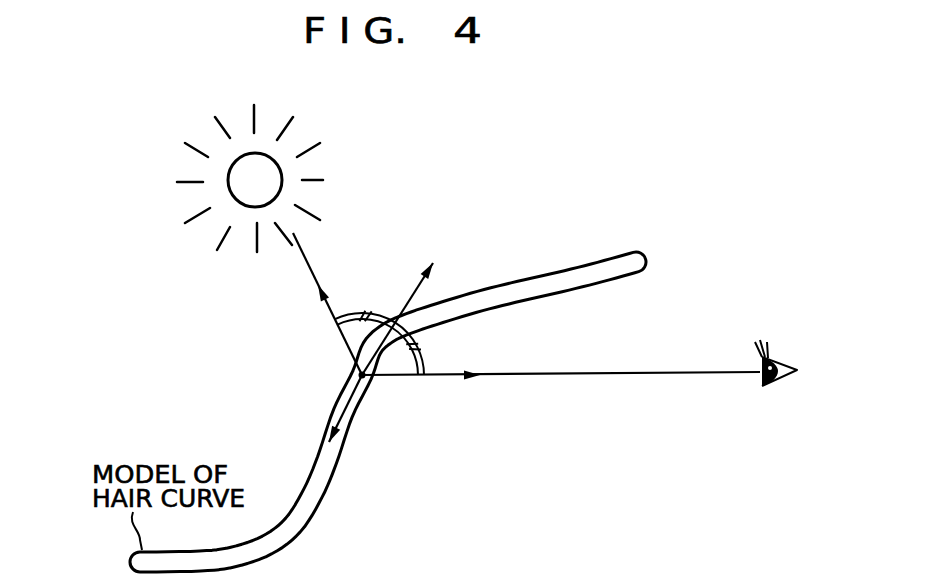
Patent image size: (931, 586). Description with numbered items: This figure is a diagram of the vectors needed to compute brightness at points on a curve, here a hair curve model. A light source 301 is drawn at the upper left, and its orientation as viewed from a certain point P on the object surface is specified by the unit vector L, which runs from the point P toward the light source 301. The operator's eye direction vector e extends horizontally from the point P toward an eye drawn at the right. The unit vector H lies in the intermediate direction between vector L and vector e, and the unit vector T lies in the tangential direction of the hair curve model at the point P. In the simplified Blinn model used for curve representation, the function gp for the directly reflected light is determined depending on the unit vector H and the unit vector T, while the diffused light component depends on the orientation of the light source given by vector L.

The light source 301 is at (227, 172).
The unit vector L is at (328, 307).
The unit vector H is at (443, 303).
The eye direction vector e is at (448, 375).
The unit vector T is at (343, 408).
The point P is at (360, 375).